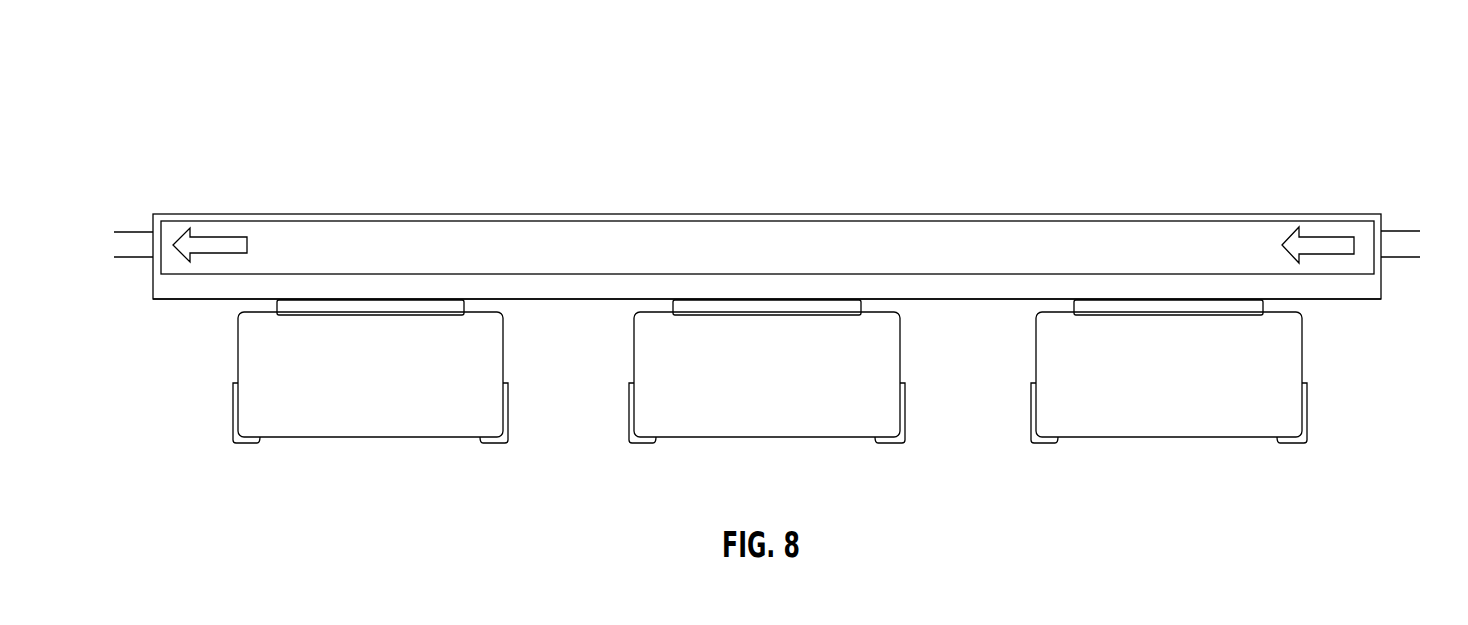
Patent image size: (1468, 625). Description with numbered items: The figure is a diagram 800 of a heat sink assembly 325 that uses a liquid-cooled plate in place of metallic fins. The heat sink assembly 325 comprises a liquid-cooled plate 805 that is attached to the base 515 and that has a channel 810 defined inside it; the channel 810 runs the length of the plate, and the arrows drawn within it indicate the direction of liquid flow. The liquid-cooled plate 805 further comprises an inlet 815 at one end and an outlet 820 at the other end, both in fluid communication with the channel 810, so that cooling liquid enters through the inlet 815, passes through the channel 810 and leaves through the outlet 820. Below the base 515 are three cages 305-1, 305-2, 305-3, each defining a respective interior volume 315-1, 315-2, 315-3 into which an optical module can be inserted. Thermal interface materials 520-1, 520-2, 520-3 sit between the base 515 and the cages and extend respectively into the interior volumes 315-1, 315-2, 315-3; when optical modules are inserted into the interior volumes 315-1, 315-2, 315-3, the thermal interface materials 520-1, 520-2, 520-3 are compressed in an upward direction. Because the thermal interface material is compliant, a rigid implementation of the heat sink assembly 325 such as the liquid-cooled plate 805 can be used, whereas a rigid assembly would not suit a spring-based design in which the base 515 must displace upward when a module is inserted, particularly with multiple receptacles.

The diagram 800 is at (1308, 64).
The heat sink assembly 325 is at (1351, 188).
The liquid-cooled plate 805 is at (1205, 213).
The channel 810 is at (422, 227).
The inlet 815 is at (1397, 258).
The outlet 820 is at (133, 251).
The base 515 is at (1341, 287).
The thermal interface material 520-1 is at (405, 315).
The thermal interface material 520-2 is at (798, 315).
The thermal interface material 520-3 is at (1206, 315).
The cage 305-1 is at (417, 440).
The cage 305-2 is at (808, 440).
The cage 305-3 is at (1217, 440).
The interior volume 315-1 is at (277, 422).
The interior volume 315-2 is at (668, 422).
The interior volume 315-3 is at (1076, 422).